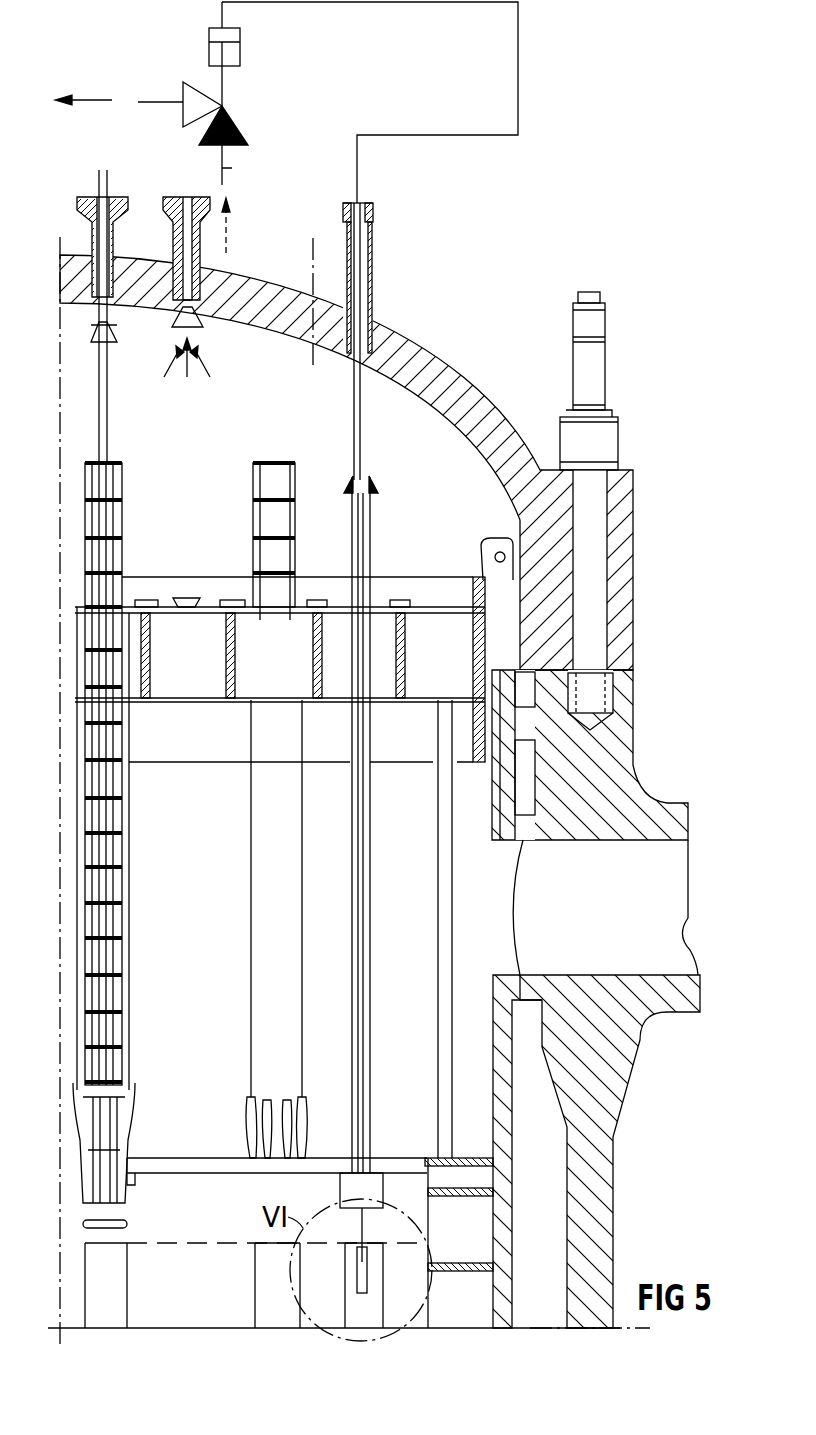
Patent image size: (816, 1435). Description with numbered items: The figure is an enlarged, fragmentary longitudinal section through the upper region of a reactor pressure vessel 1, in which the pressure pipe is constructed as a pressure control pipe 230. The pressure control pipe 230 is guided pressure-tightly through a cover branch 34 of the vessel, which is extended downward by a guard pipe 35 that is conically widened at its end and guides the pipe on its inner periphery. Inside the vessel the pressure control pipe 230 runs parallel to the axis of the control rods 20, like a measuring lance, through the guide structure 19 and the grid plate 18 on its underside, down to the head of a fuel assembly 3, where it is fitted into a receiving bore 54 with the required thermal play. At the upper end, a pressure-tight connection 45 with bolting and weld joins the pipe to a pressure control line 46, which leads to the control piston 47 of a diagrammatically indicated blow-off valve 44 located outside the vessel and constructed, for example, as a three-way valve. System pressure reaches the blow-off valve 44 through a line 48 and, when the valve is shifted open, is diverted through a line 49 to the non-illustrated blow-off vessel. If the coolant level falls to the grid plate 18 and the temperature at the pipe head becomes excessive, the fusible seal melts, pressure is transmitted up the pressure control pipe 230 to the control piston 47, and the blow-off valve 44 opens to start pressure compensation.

The pressure vessel 1 is at (608, 1195).
The fuel assembly 3 is at (341, 1300).
The grid plate 18 is at (176, 1156).
The guide structure 19 is at (185, 702).
The control rods 20 is at (107, 408).
The cover branch 34 is at (380, 340).
The guard pipe 35 is at (354, 410).
The blow-off valve 44 is at (224, 105).
The pressure-tight connection 45 is at (373, 212).
The pressure control line 46 is at (518, 75).
The control piston 47 is at (240, 38).
The line 48 is at (232, 168).
The line 49 is at (170, 102).
The receiving bore 54 is at (367, 1283).
The pressure control pipe 230 is at (372, 957).